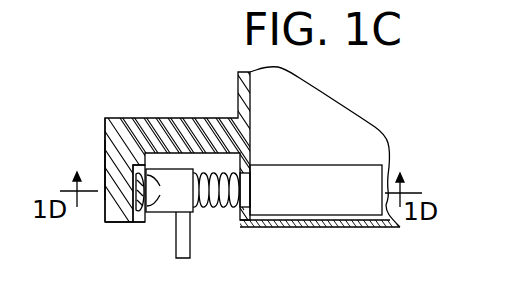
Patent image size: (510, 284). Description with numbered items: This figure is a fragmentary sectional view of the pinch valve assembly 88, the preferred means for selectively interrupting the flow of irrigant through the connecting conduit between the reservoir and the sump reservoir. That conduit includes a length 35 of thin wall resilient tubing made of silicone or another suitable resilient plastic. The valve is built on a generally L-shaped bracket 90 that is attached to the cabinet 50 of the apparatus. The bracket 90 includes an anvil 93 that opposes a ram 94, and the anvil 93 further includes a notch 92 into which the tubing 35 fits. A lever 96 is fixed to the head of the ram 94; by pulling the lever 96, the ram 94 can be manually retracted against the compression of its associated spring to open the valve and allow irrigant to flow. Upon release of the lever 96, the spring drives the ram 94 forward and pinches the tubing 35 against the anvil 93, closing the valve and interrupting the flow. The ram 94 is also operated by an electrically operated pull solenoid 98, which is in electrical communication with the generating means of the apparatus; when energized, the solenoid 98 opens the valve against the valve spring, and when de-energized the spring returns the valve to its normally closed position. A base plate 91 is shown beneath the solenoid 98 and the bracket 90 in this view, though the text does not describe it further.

The cabinet 50 is at (216, 82).
The bracket 90 is at (175, 117).
The base plate 91 is at (322, 228).
The notch 92 is at (104, 134).
The anvil 93 is at (104, 167).
The ram 94 is at (170, 181).
The lever 96 is at (185, 238).
The length of thin wall resilient tubing 35 is at (157, 212).
The pinch valve assembly 88 is at (131, 232).
The solenoid 98 is at (297, 165).